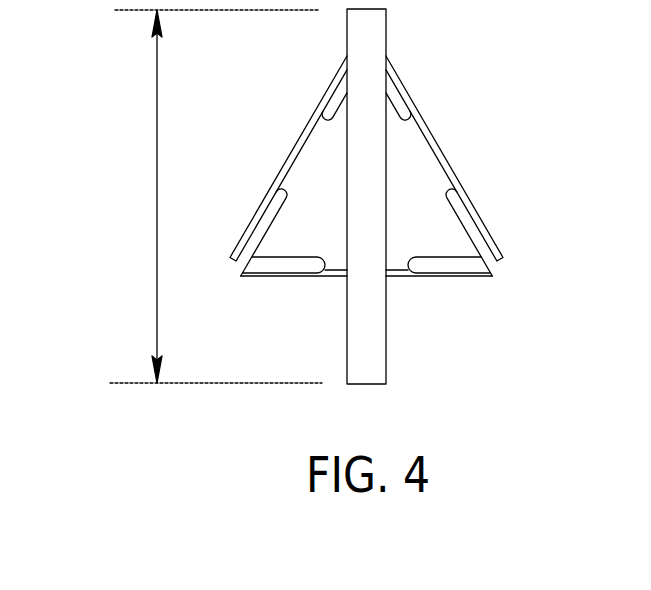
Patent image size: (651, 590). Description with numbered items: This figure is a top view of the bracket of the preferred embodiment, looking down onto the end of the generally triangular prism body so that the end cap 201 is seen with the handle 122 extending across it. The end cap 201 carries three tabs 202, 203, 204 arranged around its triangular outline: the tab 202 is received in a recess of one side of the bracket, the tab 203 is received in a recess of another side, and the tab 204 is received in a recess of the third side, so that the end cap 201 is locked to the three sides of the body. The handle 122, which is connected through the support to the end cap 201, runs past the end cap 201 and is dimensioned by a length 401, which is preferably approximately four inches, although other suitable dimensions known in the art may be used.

The handle 122 is at (386, 330).
The end cap 201 is at (427, 233).
The tab 202 is at (298, 142).
The tab 203 is at (330, 262).
The tab 204 is at (436, 146).
The length 401 is at (156, 197).